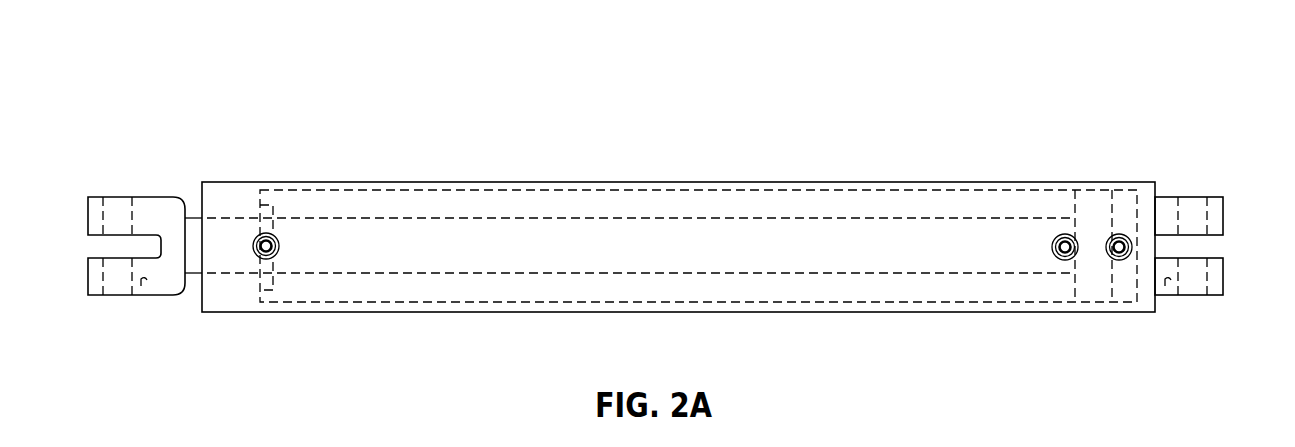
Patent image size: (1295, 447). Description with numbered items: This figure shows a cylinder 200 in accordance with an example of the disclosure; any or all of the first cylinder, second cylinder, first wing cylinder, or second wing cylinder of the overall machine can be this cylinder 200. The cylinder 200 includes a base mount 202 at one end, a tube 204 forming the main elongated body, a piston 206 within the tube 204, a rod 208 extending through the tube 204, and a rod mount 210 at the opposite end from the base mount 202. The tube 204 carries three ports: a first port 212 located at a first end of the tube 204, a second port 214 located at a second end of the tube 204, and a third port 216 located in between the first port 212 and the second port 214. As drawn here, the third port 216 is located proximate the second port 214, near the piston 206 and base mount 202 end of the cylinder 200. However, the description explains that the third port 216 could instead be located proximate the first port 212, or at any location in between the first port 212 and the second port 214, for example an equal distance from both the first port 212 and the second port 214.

The cylinder 200 is at (957, 78).
The base mount 202 is at (1212, 208).
The tube 204 is at (723, 183).
The piston 206 is at (1090, 210).
The rod 208 is at (396, 247).
The rod mount 210 is at (117, 218).
The first port 212 is at (255, 238).
The second port 214 is at (1117, 235).
The third port 216 is at (1053, 238).